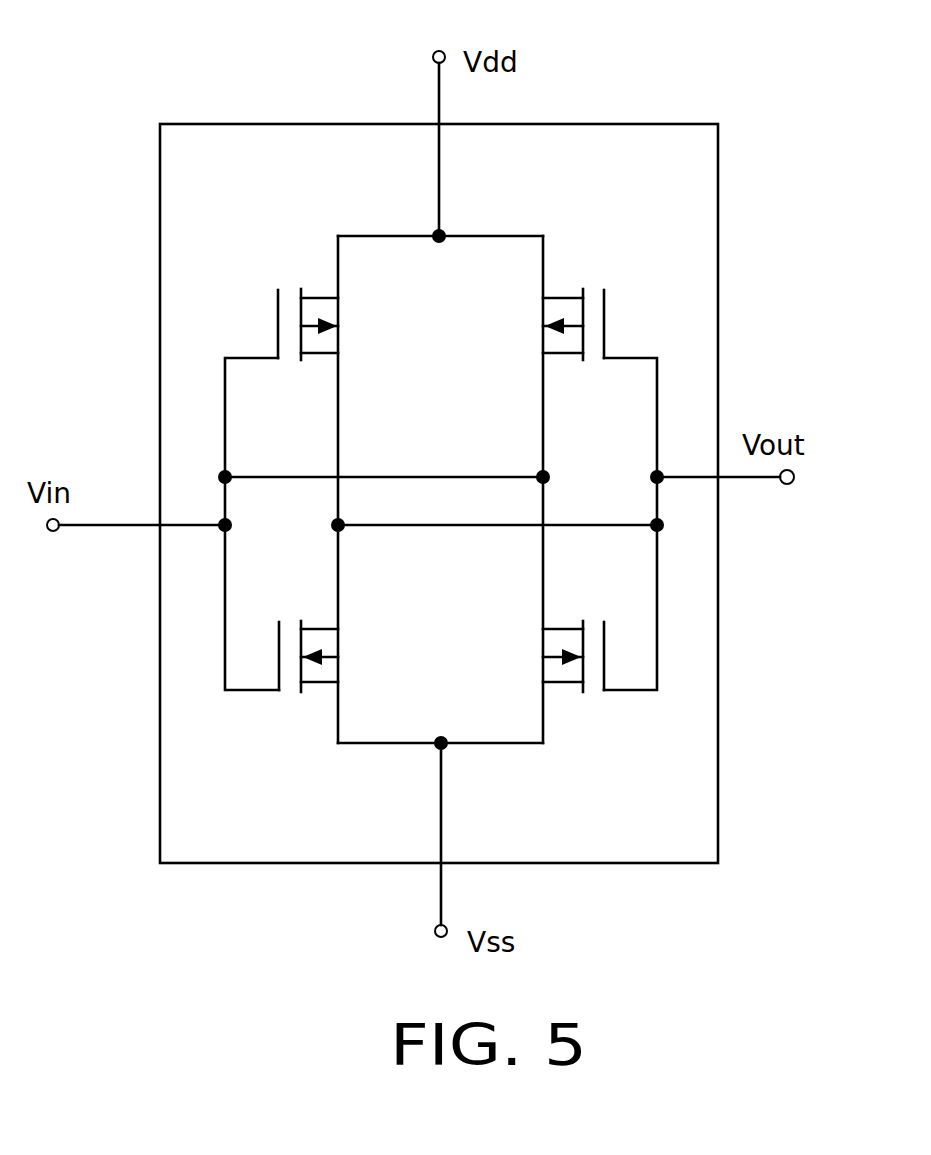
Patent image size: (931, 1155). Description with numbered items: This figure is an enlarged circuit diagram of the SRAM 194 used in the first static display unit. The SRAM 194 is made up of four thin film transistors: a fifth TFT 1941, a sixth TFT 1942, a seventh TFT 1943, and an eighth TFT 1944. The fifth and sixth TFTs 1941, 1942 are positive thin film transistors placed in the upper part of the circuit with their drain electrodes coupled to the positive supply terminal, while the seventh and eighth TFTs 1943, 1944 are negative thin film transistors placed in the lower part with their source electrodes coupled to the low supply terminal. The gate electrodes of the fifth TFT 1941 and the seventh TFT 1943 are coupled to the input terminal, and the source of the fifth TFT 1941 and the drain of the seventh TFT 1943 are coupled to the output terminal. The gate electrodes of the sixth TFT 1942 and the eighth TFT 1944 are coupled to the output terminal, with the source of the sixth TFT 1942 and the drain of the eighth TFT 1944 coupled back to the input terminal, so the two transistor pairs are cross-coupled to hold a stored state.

The SRAM 194 is at (635, 864).
The fifth TFT 1941 is at (290, 290).
The sixth TFT 1942 is at (595, 296).
The seventh TFT 1943 is at (293, 691).
The eighth TFT 1944 is at (595, 687).